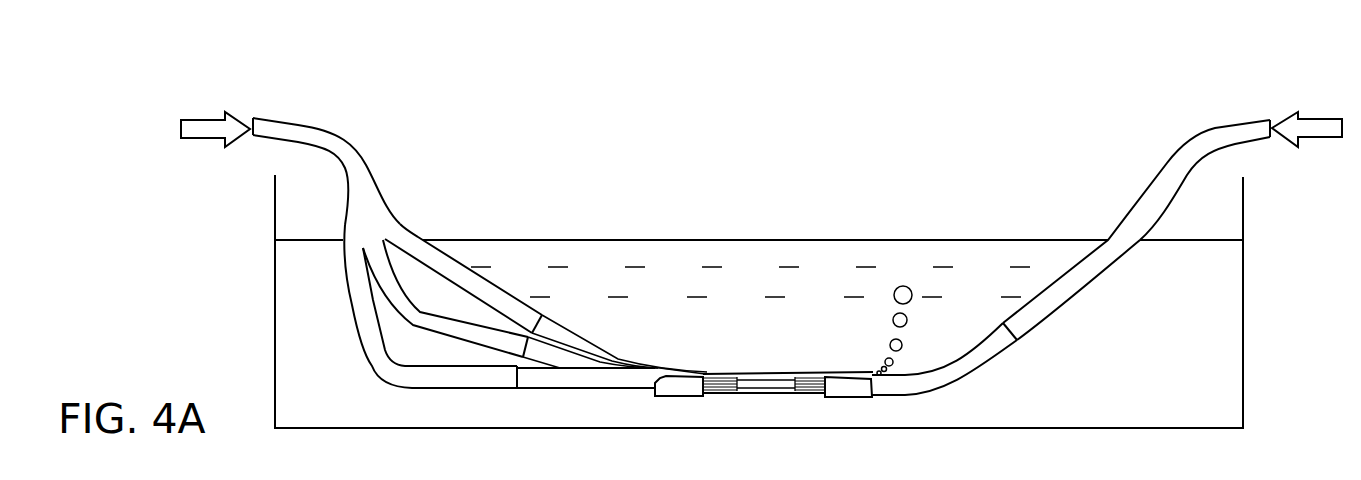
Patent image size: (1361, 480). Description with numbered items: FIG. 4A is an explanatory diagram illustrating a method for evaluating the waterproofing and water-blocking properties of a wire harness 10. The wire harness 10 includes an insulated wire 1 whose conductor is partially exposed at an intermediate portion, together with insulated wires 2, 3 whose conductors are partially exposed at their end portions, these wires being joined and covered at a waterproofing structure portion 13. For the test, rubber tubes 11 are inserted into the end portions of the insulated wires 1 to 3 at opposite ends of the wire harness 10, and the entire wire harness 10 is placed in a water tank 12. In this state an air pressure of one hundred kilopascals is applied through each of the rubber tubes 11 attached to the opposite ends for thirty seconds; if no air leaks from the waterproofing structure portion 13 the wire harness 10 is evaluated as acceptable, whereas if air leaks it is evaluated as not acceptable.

The insulated wire 1 is at (580, 337).
The insulated wire 2 is at (550, 353).
The insulated wire 3 is at (597, 380).
The wire harness 10 is at (770, 424).
The rubber tube 11 is at (340, 142).
The water tank 12 is at (1243, 347).
The waterproofing structure portion 13 is at (757, 396).